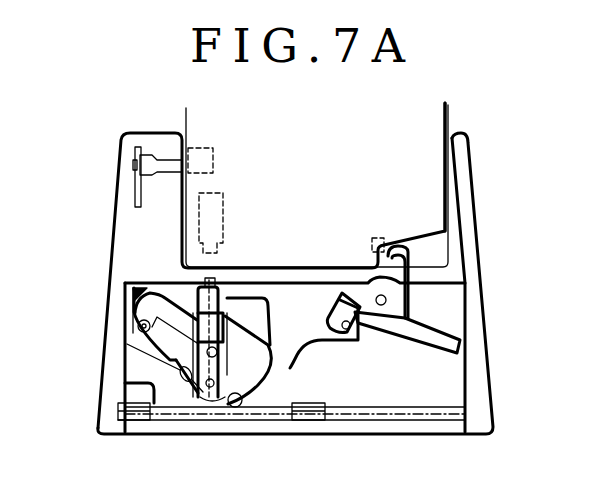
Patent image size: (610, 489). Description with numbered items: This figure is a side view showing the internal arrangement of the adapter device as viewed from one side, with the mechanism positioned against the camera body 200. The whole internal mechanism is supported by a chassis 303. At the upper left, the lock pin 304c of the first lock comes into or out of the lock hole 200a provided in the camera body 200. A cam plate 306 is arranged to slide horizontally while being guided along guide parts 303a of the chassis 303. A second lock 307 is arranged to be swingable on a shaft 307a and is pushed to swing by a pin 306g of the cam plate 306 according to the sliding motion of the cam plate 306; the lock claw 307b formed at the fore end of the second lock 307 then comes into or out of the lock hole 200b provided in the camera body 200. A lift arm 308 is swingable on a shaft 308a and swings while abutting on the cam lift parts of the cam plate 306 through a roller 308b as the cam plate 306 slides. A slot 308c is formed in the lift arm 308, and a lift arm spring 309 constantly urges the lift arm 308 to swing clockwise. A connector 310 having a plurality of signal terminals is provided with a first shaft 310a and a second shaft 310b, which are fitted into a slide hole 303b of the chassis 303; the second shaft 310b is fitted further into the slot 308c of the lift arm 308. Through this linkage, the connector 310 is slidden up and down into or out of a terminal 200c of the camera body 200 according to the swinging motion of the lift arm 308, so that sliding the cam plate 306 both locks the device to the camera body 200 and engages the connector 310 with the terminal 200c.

The camera body 200 is at (448, 122).
The lock hole 200a is at (200, 147).
The lock hole 200b is at (372, 245).
The terminal 200c is at (223, 193).
The chassis 303 is at (448, 383).
The guide parts 303a is at (448, 412).
The slide hole 303b is at (210, 284).
The lock pin 304c is at (166, 160).
The cam plate 306 is at (295, 325).
The pin 306g is at (345, 245).
The second lock 307 is at (450, 333).
The shaft 307a is at (388, 300).
The lock claw 307b is at (395, 250).
The lift arm 308 is at (158, 362).
The shaft 308a is at (138, 327).
The roller 308b is at (237, 407).
The slot 308c is at (187, 380).
The lift arm spring 309 is at (133, 305).
The connector 310 is at (228, 300).
The first shaft 310a is at (262, 340).
The second shaft 310b is at (210, 387).